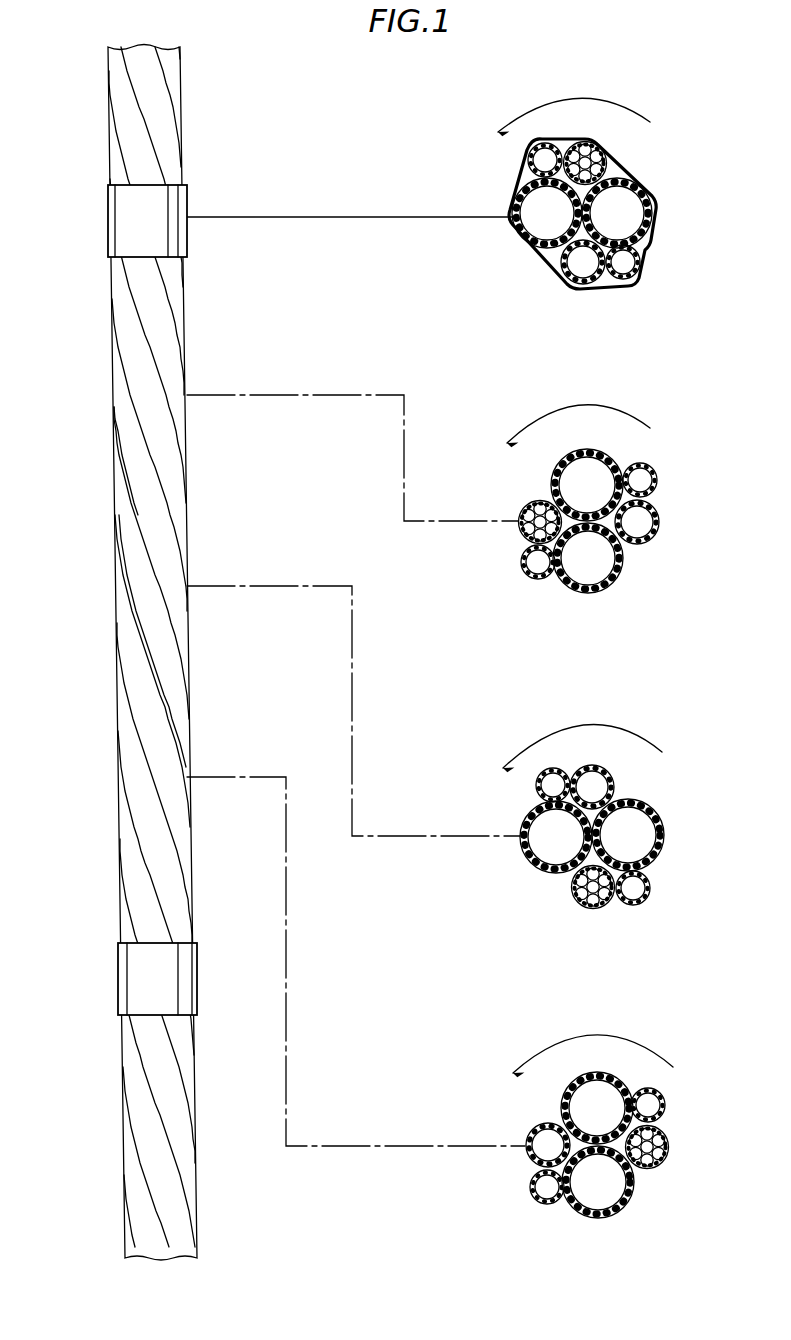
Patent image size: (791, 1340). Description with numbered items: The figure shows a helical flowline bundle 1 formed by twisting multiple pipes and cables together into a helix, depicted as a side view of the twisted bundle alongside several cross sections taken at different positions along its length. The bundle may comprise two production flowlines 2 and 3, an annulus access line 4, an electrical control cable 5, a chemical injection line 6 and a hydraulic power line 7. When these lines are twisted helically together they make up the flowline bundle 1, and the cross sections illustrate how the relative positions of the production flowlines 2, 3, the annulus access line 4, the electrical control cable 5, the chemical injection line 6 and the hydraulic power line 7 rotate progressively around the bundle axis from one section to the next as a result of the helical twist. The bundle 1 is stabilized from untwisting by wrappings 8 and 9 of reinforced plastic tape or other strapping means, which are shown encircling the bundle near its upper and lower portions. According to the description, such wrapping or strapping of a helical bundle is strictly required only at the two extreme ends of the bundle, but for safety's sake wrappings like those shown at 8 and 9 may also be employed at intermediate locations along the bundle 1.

The helical flowline bundle 1 is at (113, 628).
The production flowline 2 is at (531, 228).
The production flowline 3 is at (637, 213).
The annulus access line 4 is at (580, 277).
The electrical control cable 5 is at (598, 160).
The chemical injection line 6 is at (628, 270).
The hydraulic power line 7 is at (528, 160).
The wrapping 8 is at (108, 222).
The wrapping 9 is at (118, 980).